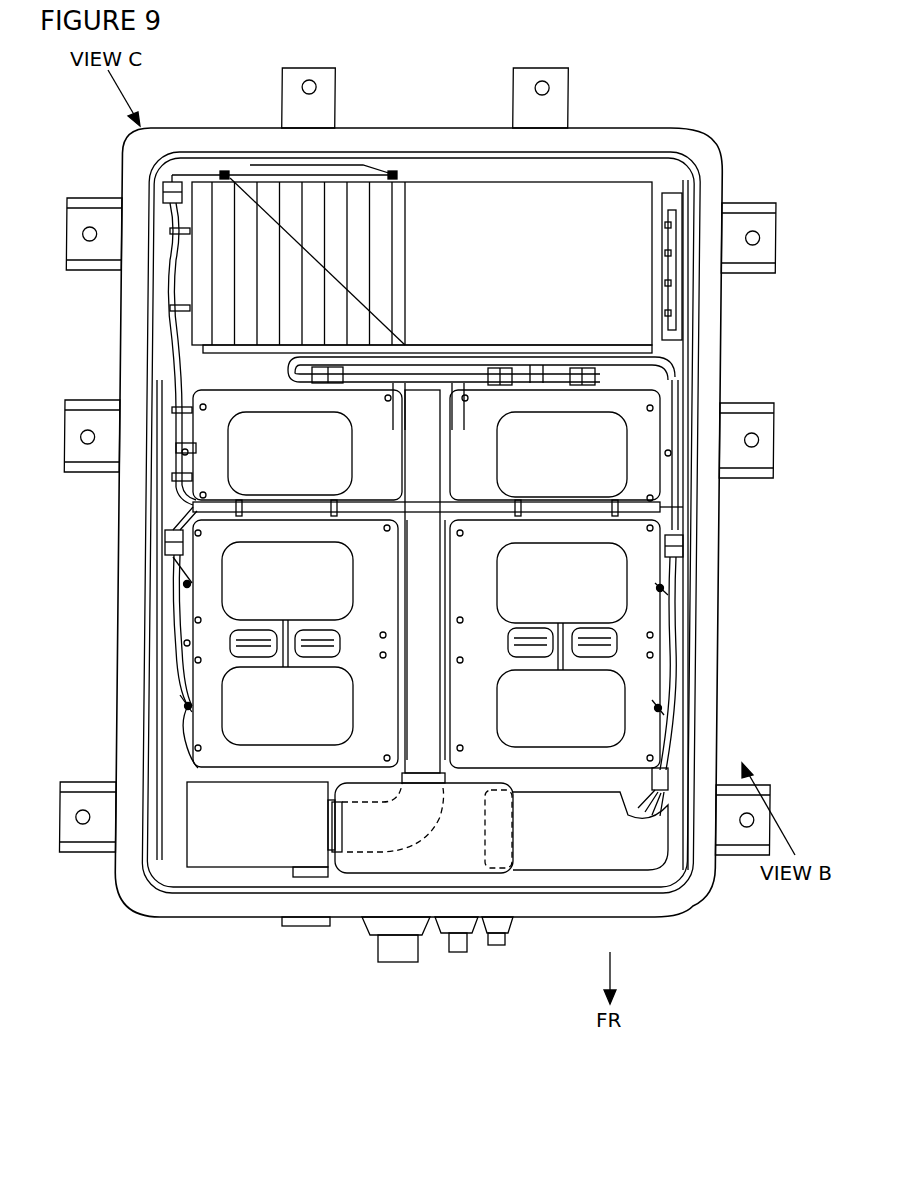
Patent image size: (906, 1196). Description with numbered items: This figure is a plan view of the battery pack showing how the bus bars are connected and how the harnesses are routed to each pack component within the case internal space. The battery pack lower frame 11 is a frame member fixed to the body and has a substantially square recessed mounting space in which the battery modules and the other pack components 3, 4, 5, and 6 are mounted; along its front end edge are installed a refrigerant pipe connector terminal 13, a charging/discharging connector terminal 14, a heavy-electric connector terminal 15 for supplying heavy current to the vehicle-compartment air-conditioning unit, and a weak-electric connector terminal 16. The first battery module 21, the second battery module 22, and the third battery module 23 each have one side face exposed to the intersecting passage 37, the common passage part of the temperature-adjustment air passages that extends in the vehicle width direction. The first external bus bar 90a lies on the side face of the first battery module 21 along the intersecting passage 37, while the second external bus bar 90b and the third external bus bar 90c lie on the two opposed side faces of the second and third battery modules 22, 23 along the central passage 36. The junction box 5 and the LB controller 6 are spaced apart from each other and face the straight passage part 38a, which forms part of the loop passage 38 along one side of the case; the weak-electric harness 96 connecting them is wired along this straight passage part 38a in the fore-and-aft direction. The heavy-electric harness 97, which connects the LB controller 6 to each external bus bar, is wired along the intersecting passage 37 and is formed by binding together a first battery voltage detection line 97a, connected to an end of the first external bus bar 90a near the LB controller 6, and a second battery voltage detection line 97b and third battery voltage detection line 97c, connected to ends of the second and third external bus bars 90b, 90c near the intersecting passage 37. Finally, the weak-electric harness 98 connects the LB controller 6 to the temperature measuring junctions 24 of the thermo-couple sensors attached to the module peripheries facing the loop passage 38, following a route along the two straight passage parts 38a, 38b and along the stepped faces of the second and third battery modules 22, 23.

The pack component 3 is at (236, 853).
The pack component 4 is at (395, 858).
The junction box 5 is at (578, 860).
The LB controller 6 is at (677, 200).
The battery pack lower frame 11 is at (590, 128).
The refrigerant pipe connector terminal 13 is at (300, 928).
The charging/discharging connector terminal 14 is at (400, 964).
The heavy-electric connector terminal 15 is at (458, 954).
The weak-electric connector terminal 16 is at (497, 947).
The first battery module 21 is at (458, 210).
The second battery module 22 is at (247, 567).
The third battery module 23 is at (608, 577).
The temperature measuring junction 24 is at (232, 178).
The central passage 36 is at (430, 477).
The intersecting passage 37 is at (462, 372).
The loop passage 38 is at (613, 170).
The straight passage part 38a is at (683, 400).
The straight passage part 38b is at (153, 528).
The first external bus bar 90a is at (271, 352).
The second external bus bar 90b is at (407, 578).
The third external bus bar 90c is at (447, 598).
The weak-electric harness 96 is at (683, 507).
The heavy-electric harness 97 is at (430, 380).
The first battery voltage detection line 97a is at (603, 370).
The second battery voltage detection line 97b is at (372, 378).
The third battery voltage detection line 97c is at (473, 380).
The weak-electric harness 98 is at (285, 497).